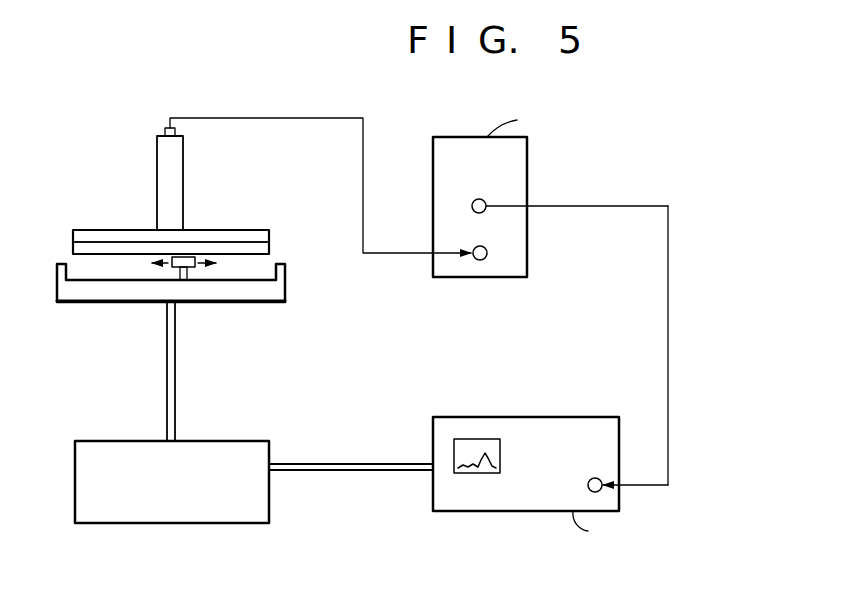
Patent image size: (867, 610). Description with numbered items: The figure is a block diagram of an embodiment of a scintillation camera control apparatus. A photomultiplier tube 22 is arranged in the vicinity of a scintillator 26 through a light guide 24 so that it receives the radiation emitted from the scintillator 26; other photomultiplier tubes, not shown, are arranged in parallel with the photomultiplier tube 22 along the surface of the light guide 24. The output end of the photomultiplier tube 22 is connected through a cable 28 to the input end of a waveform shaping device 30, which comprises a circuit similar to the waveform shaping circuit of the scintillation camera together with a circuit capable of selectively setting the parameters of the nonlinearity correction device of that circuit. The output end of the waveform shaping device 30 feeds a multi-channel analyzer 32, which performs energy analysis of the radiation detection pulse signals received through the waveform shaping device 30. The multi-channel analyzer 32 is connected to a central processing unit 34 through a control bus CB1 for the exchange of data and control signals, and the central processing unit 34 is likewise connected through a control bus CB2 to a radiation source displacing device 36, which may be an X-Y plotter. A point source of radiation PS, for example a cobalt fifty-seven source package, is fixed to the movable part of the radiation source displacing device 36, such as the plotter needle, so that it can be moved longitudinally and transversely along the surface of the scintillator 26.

The photomultiplier tube 22 is at (158, 180).
The light guide 24 is at (243, 232).
The scintillator 26 is at (80, 247).
The cable 28 is at (367, 134).
The waveform shaping device 30 is at (520, 165).
The multi-channel analyzer 32 is at (571, 427).
The central processing unit 34 is at (220, 441).
The radiation source displacing device 36 is at (237, 292).
The point source of radiation PS is at (172, 272).
The control bus CB1 is at (350, 462).
The control bus CB2 is at (166, 372).